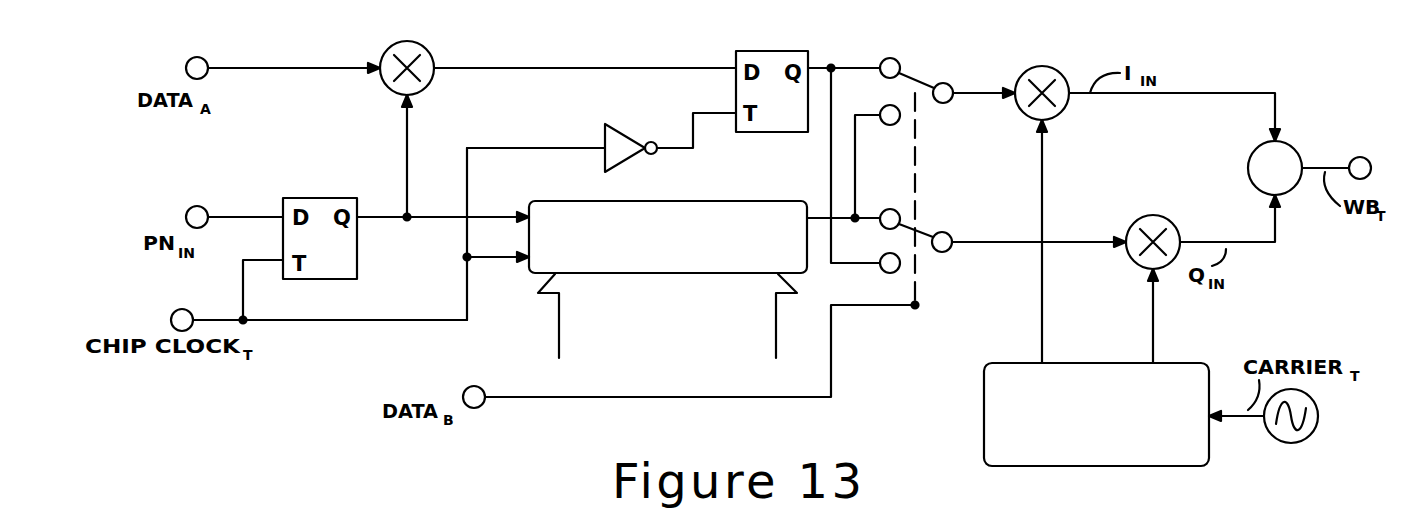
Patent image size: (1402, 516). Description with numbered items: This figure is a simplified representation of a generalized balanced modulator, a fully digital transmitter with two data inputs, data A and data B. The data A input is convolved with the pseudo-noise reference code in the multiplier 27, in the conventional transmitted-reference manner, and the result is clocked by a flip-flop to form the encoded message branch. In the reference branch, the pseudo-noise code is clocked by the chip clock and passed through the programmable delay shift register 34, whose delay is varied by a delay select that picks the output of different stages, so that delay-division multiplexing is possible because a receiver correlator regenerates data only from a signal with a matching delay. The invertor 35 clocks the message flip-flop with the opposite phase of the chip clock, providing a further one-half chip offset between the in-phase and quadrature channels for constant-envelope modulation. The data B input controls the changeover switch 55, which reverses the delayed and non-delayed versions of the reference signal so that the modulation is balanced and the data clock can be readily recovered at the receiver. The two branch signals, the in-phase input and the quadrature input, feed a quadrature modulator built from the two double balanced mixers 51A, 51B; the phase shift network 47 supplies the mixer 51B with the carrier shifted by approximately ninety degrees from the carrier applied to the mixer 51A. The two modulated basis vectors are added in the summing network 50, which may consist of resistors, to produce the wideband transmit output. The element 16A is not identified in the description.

The multiplier 27 is at (432, 54).
The invertor 35 is at (630, 128).
The programmable delay shift register 34 is at (732, 201).
The changeover switch 55 is at (930, 58).
The double balanced mixer 51A is at (1064, 108).
The double balanced mixer 51B is at (1162, 218).
The summing network 50 is at (1248, 168).
The phase shift network 47 is at (984, 412).
The transmitter 16A is at (382, 515).